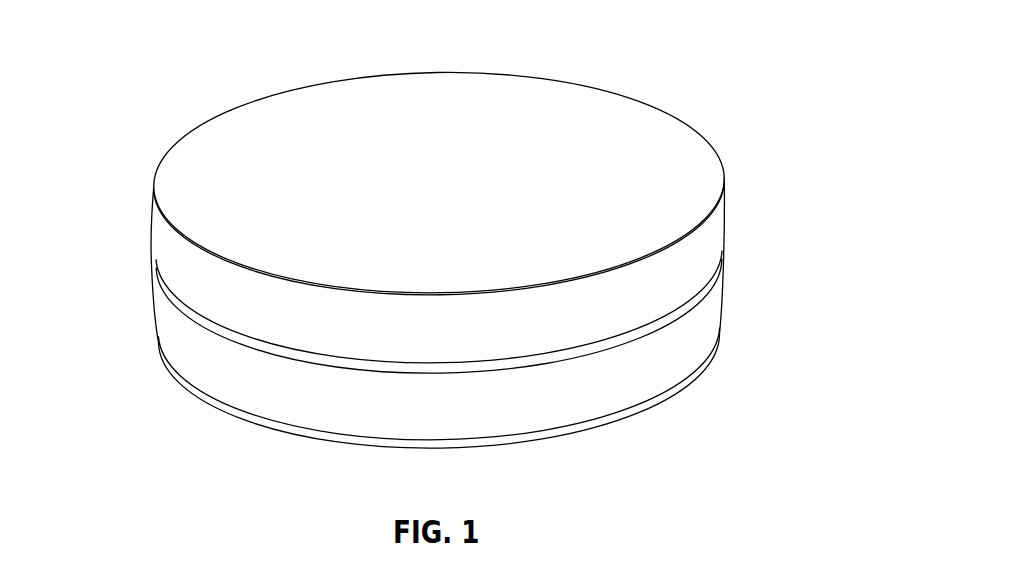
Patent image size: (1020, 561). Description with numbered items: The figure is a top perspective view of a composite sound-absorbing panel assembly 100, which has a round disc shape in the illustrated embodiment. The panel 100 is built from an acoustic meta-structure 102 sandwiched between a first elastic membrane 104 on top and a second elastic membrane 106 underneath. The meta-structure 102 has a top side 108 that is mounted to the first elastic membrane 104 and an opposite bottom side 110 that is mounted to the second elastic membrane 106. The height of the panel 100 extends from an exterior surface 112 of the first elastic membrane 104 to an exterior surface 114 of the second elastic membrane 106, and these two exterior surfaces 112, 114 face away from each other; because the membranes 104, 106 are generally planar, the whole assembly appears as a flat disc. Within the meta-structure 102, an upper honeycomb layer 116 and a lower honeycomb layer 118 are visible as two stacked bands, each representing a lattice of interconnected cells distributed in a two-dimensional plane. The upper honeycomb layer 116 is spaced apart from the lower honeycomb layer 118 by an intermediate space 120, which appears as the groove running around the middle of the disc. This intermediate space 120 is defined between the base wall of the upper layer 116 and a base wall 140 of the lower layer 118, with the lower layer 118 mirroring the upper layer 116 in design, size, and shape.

The composite sound-absorbing panel assembly 100 is at (668, 67).
The acoustic meta-structure 102 is at (150, 287).
The first elastic membrane 104 is at (170, 232).
The second elastic membrane 106 is at (172, 378).
The top side 108 is at (165, 203).
The bottom side 110 is at (149, 357).
The exterior surface 112 is at (405, 135).
The exterior surface 114 is at (465, 445).
The upper honeycomb layer 116 is at (705, 245).
The lower honeycomb layer 118 is at (702, 335).
The intermediate space 120 is at (716, 297).
The base wall 140 is at (618, 343).